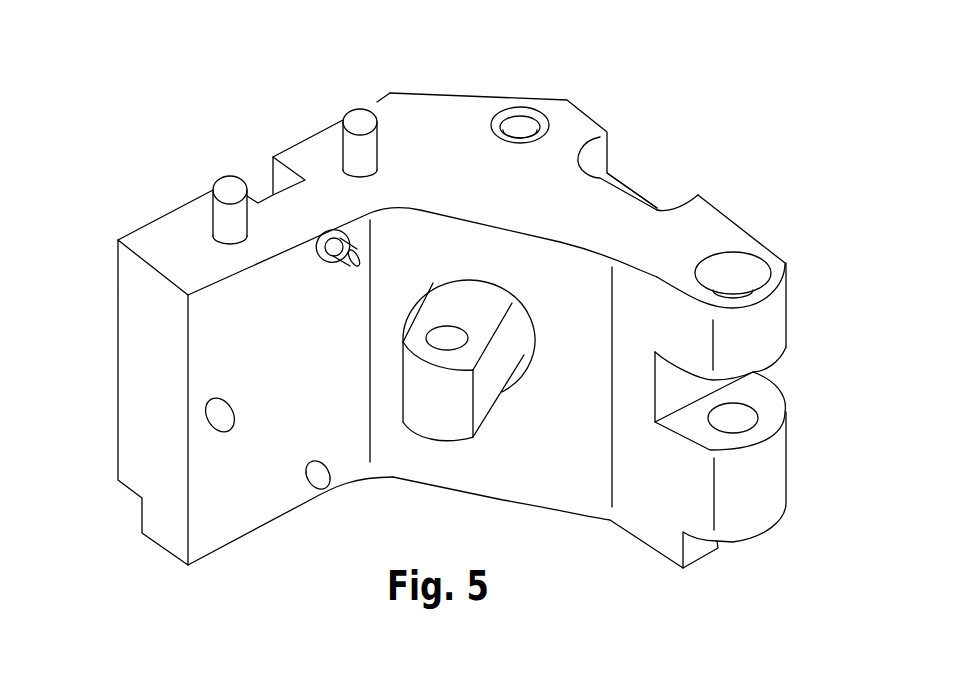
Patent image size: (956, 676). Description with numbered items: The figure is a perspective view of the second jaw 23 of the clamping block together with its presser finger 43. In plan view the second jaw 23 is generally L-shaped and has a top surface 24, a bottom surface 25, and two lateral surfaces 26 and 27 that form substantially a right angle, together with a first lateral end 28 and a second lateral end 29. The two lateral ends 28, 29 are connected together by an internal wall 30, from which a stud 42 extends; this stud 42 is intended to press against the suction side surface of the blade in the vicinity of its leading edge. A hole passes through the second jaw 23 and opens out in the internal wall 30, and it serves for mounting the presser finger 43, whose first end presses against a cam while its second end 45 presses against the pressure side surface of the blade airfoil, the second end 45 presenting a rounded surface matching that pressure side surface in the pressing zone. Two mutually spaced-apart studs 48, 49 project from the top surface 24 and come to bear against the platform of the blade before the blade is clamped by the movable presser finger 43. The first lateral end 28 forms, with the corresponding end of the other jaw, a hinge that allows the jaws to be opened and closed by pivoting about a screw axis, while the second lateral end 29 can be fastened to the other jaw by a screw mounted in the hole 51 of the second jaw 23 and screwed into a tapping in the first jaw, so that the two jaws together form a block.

The second jaw 23 is at (439, 312).
The top surface 24 is at (440, 128).
The bottom surface 25 is at (500, 503).
The lateral surface 26 is at (728, 202).
The lateral surface 27 is at (176, 198).
The first lateral end 28 is at (798, 380).
The second lateral end 29 is at (148, 395).
The internal wall 30 is at (562, 488).
The stud 42 is at (343, 272).
The presser finger 43 is at (477, 375).
The second end 45 is at (444, 405).
The stud 48 is at (357, 115).
The stud 49 is at (228, 178).
The hole 51 is at (220, 415).